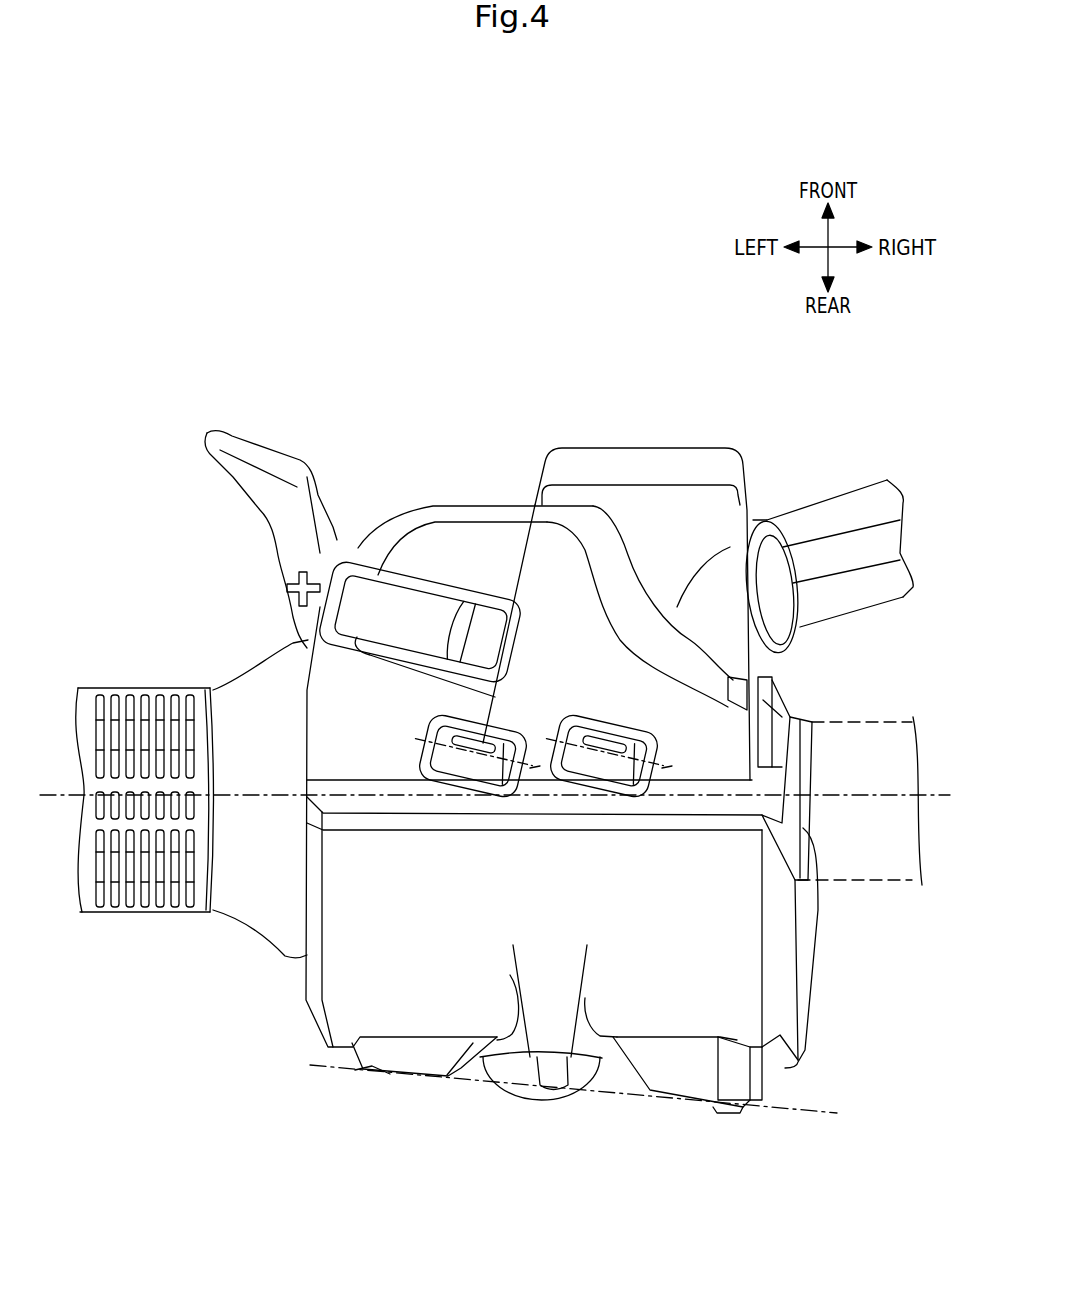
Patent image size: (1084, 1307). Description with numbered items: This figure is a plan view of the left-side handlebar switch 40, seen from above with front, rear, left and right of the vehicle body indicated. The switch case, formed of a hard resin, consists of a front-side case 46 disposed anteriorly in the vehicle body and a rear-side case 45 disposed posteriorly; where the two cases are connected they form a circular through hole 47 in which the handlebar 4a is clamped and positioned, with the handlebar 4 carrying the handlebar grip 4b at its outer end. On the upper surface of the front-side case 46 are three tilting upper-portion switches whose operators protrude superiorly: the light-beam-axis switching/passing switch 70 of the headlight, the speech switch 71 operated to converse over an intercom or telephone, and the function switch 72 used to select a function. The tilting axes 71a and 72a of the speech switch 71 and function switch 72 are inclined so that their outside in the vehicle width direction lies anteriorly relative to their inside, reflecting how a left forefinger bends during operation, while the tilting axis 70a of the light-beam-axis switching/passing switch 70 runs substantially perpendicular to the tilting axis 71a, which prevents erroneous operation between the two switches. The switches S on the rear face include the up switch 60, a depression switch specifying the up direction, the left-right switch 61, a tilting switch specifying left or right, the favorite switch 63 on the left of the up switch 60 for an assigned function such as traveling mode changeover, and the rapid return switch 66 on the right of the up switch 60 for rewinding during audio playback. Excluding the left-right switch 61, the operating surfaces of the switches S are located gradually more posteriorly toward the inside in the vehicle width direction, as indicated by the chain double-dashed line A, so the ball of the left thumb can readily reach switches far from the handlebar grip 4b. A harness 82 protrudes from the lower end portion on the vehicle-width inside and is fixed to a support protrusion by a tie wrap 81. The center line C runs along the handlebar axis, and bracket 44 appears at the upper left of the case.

The handlebar 4 is at (178, 680).
The handlebar 4a is at (848, 882).
The handlebar grip 4b is at (135, 688).
The handlebar switch 40 is at (306, 1005).
The bracket 44 is at (247, 478).
The rear-side case 45 is at (723, 977).
The front-side case 46 is at (710, 737).
The circular through hole 47 is at (808, 835).
The up switch 60 is at (552, 1073).
The left-right switch 61 is at (557, 1083).
The favorite switch 63 is at (412, 1060).
The rapid return switch 66 is at (685, 1072).
The light-beam-axis switching/passing switch 70 is at (403, 610).
The tilting axis 70a is at (447, 690).
The speech switch 71 is at (535, 767).
The tilting axis 71a is at (605, 737).
The function switch 72 is at (670, 767).
The tilting axis 72a is at (747, 505).
The tie wrap 81 is at (766, 533).
The harness 82 is at (840, 496).
The switches S is at (360, 1080).
The center axis C is at (940, 800).
The chain double-dashed line A is at (800, 1114).